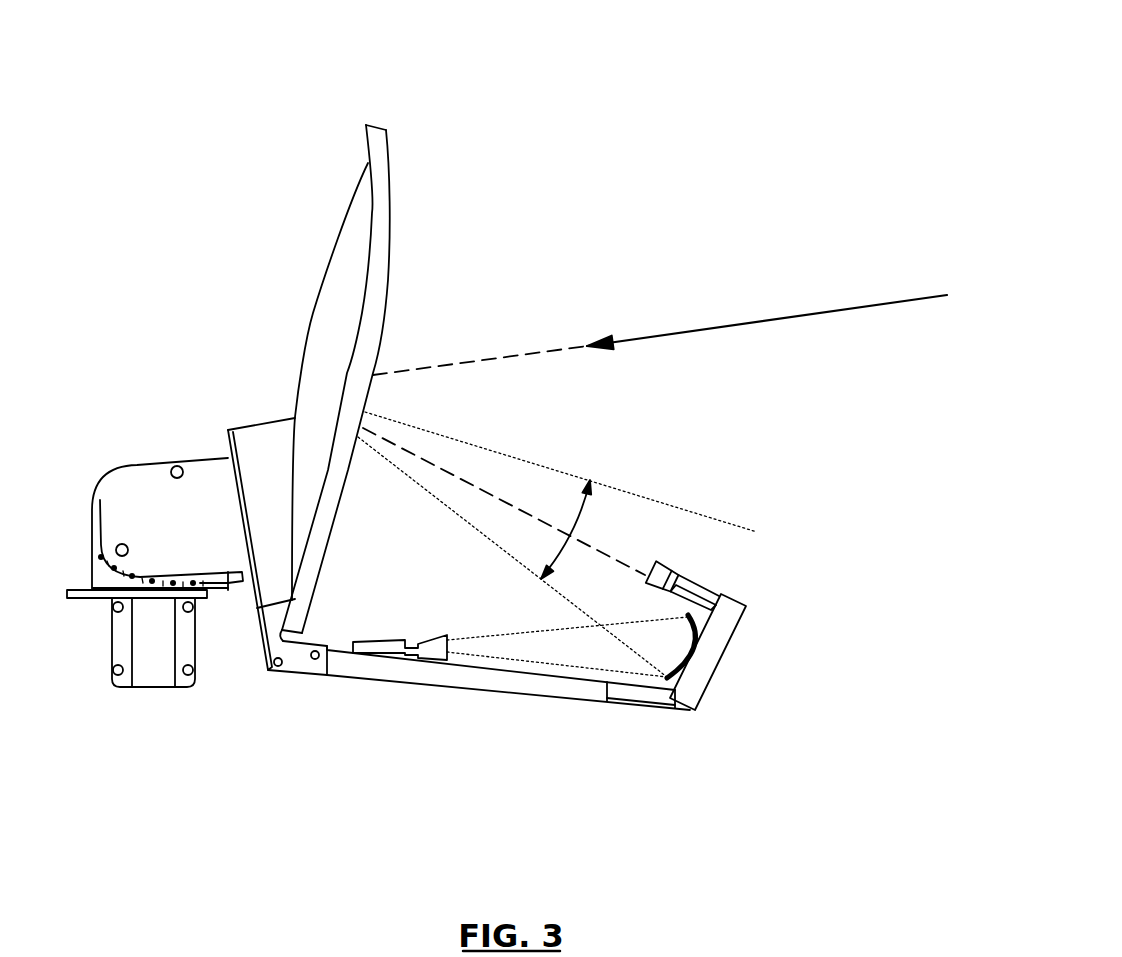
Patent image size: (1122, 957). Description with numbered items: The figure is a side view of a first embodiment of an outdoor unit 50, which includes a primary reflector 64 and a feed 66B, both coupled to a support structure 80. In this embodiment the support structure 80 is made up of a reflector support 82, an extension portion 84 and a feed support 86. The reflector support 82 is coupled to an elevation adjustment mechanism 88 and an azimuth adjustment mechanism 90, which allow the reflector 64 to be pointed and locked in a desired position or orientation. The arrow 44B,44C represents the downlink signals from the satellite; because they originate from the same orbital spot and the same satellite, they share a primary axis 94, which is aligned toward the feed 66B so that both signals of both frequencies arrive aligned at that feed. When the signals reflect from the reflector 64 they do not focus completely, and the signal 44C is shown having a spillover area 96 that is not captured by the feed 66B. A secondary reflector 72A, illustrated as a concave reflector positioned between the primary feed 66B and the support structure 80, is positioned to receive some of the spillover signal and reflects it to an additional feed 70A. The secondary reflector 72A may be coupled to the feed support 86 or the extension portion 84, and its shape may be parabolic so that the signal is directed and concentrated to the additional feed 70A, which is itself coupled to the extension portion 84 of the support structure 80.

The outdoor unit 50 is at (319, 366).
The primary reflector 64 is at (373, 123).
The downlink signals arrow 44B,44C is at (737, 322).
The signal 44C is at (545, 467).
The primary axis 94 is at (453, 473).
The spillover area 96 is at (587, 512).
The feed 66B is at (657, 563).
The secondary reflector 72A is at (692, 627).
The feed support 86 is at (703, 663).
The extension portion 84 is at (573, 690).
The support structure 80 is at (479, 712).
The reflector support 82 is at (268, 613).
The elevation adjustment mechanism 88 is at (118, 490).
The azimuth adjustment mechanism 90 is at (102, 577).
The additional feed 70A is at (433, 638).